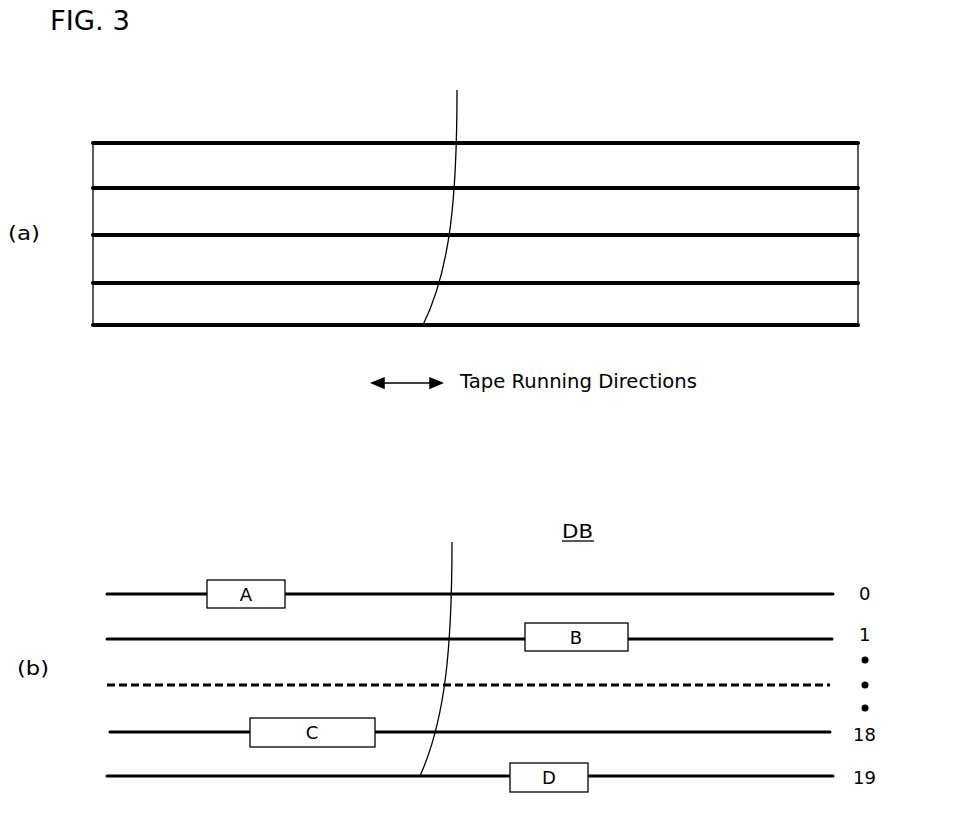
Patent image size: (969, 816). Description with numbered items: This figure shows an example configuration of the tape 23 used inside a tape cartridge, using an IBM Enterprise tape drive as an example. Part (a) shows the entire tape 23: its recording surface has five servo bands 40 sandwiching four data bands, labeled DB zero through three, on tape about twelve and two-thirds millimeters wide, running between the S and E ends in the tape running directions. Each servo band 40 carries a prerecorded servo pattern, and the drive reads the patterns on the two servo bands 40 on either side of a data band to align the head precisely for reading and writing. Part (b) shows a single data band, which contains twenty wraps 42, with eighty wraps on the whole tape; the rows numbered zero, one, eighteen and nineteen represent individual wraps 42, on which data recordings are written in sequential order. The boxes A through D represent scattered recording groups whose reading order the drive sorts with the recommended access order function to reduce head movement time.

The tape 23 is at (606, 91).
The servo band 40 is at (405, 142).
The wrap 42 is at (395, 593).